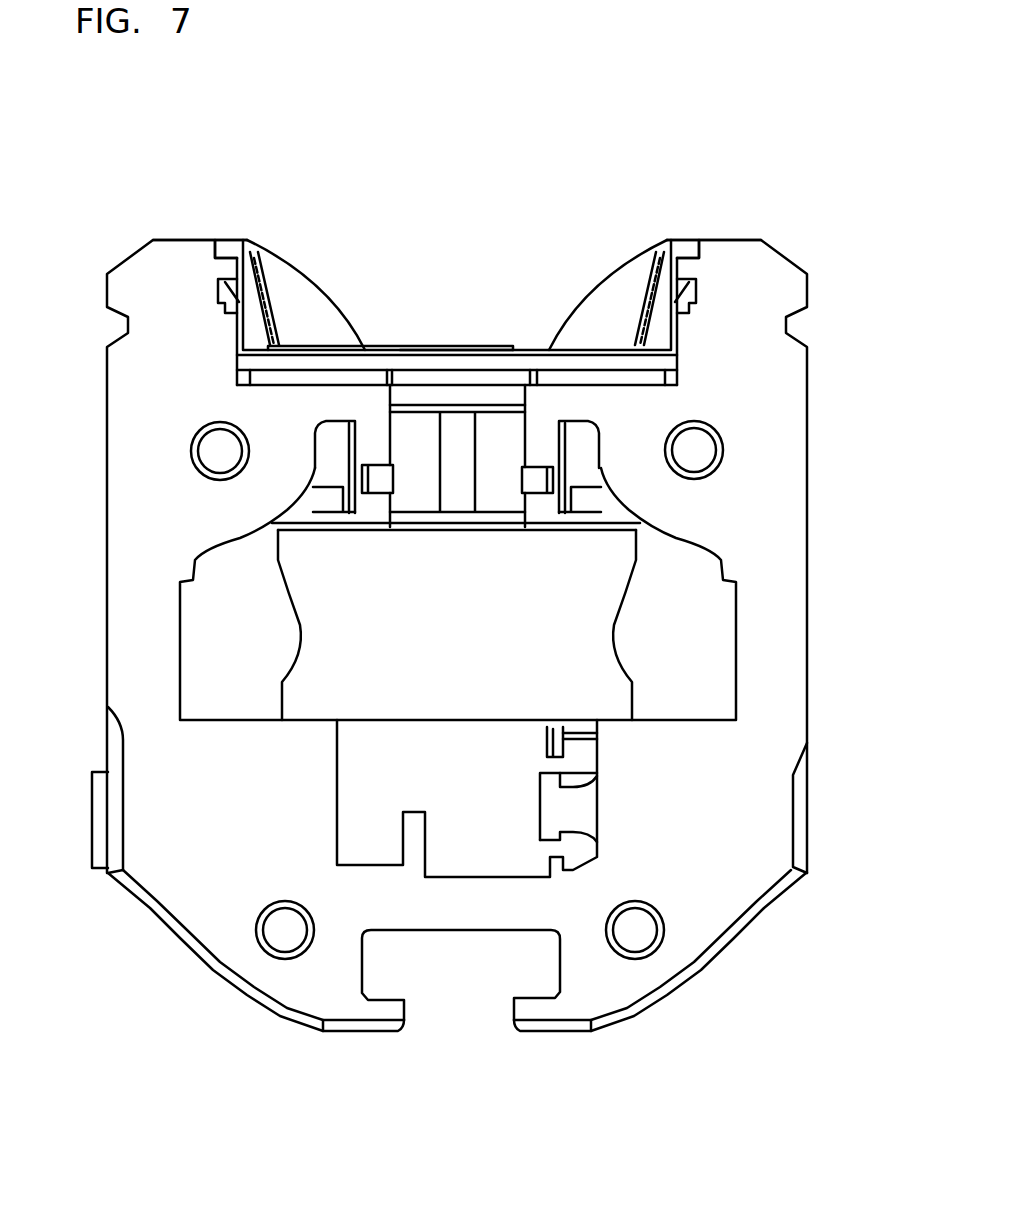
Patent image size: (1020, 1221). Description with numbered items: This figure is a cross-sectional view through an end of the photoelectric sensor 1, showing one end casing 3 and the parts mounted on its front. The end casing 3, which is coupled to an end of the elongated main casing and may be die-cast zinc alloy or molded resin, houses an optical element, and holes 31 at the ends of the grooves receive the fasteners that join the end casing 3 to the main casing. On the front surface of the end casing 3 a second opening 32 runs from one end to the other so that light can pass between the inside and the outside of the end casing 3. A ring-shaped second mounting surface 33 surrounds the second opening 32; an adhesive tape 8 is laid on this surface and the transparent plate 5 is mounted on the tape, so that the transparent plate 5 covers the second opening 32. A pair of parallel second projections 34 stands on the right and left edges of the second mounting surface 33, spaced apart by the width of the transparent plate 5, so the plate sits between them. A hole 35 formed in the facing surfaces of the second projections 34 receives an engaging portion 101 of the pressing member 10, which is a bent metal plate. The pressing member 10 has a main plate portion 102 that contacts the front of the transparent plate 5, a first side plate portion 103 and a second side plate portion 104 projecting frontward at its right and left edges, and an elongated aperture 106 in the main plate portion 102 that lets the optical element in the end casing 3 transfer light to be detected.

The photoelectric sensor 1 is at (740, 107).
The end casing 3 is at (805, 624).
The transparent plate 5 is at (520, 360).
The adhesive tape 8 is at (312, 372).
The pressing member 10 is at (240, 239).
The hole 31 is at (207, 448).
The second opening 32 is at (458, 390).
The second mounting surface 33 is at (262, 378).
The second projection 34 is at (176, 240).
The hole 35 is at (235, 318).
The engaging portion 101 is at (218, 288).
The main plate portion 102 is at (372, 346).
The first side plate portion 103 is at (648, 303).
The second side plate portion 104 is at (274, 312).
The aperture 106 is at (430, 348).